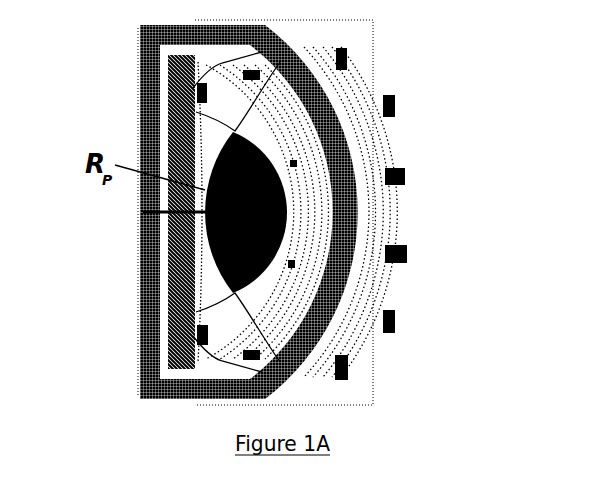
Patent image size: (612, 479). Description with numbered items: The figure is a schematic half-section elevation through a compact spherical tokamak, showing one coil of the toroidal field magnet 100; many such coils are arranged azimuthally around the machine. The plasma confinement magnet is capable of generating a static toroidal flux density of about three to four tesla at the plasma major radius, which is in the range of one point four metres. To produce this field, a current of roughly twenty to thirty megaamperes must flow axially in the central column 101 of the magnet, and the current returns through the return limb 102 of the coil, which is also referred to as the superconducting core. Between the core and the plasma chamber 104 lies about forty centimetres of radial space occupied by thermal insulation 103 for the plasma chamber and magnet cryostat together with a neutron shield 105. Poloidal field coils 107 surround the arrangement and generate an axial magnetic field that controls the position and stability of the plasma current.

The toroidal field magnet 100 is at (172, 400).
The central column 101 is at (146, 250).
The return limb 102 is at (360, 146).
The thermal insulation 103 is at (161, 324).
The plasma chamber 104 is at (295, 96).
The neutron shield 105 is at (160, 135).
The poloidal field coils 107 is at (404, 134).